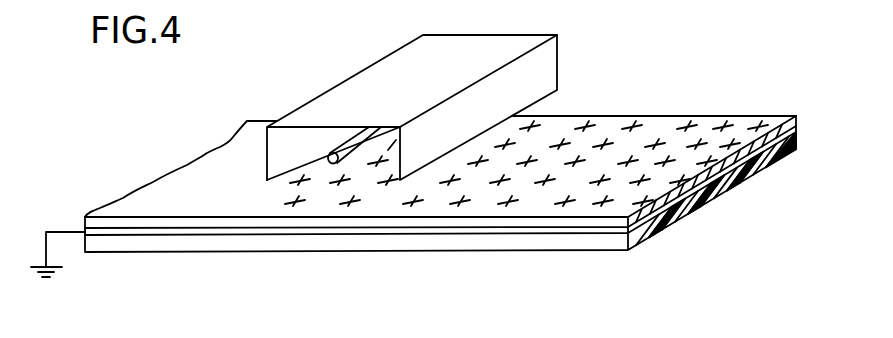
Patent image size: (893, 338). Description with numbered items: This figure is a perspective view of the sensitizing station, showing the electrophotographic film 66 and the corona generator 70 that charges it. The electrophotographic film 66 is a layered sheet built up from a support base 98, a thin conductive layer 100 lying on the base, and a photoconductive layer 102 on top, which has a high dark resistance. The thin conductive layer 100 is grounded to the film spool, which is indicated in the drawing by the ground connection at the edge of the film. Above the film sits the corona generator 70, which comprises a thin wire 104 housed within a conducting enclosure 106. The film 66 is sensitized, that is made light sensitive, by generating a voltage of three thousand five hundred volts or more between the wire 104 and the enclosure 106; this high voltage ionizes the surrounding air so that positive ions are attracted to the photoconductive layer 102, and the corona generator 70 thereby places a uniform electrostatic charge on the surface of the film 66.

The corona generator 70 is at (581, 56).
The electrophotographic film 66 is at (685, 98).
The conducting enclosure 106 is at (367, 82).
The thin wire 104 is at (378, 135).
The photoconductive layer 102 is at (442, 221).
The thin conductive layer 100 is at (510, 228).
The support base 98 is at (563, 243).